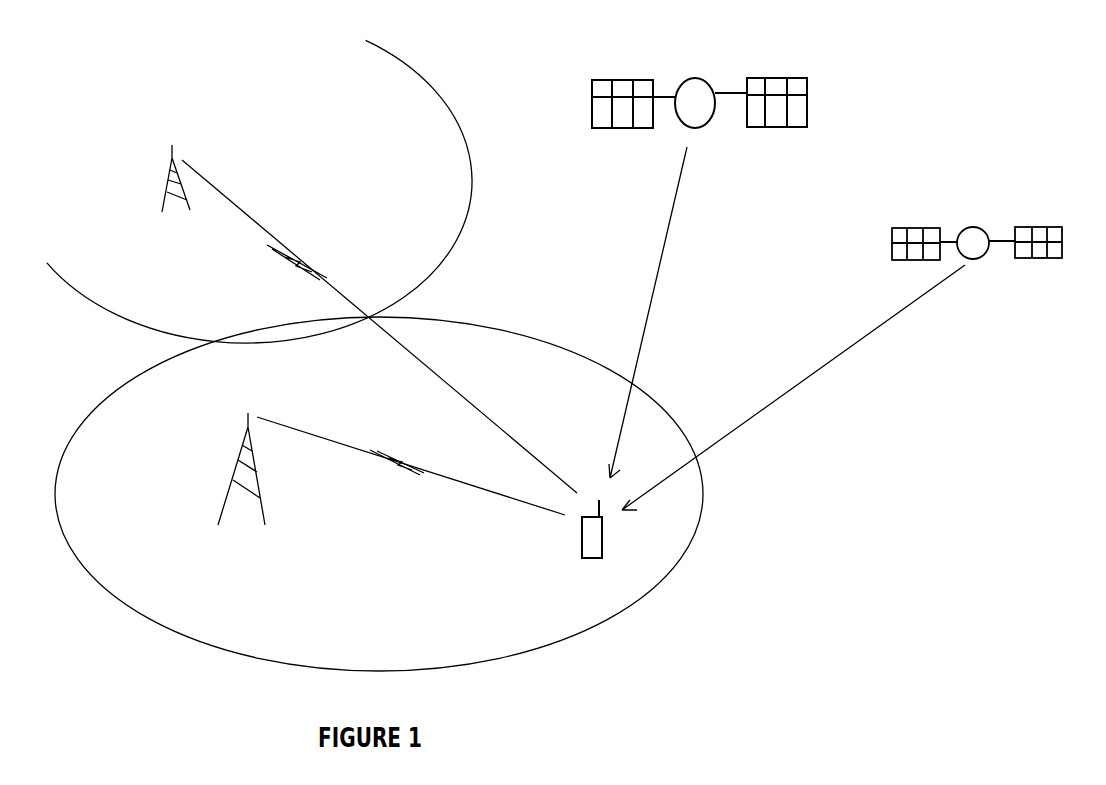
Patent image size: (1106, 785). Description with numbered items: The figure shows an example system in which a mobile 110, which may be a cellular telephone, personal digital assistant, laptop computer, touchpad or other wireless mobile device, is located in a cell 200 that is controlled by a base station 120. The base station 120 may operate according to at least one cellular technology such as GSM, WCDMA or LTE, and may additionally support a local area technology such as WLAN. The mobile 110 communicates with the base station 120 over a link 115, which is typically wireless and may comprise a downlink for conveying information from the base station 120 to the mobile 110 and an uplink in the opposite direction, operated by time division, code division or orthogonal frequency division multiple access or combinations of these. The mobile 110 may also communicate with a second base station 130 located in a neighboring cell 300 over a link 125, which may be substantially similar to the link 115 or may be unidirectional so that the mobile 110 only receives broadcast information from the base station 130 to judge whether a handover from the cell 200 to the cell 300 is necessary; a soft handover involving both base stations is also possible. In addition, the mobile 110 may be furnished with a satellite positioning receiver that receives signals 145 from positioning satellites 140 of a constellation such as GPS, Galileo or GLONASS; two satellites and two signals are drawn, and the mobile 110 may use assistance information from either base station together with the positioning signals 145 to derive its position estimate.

The mobile 110 is at (592, 541).
The link 115 is at (411, 466).
The base station 120 is at (241, 471).
The link 125 is at (379, 326).
The base station 130 is at (176, 190).
The positioning satellites 140 is at (827, 157).
The signals 145 is at (787, 328).
The cell 200 is at (379, 494).
The cell 300 is at (259, 191).